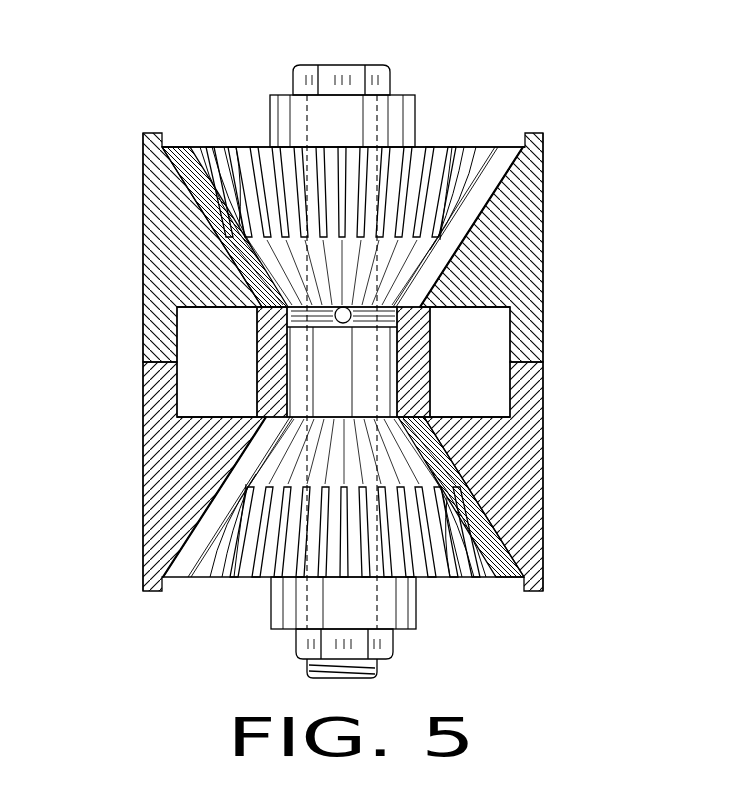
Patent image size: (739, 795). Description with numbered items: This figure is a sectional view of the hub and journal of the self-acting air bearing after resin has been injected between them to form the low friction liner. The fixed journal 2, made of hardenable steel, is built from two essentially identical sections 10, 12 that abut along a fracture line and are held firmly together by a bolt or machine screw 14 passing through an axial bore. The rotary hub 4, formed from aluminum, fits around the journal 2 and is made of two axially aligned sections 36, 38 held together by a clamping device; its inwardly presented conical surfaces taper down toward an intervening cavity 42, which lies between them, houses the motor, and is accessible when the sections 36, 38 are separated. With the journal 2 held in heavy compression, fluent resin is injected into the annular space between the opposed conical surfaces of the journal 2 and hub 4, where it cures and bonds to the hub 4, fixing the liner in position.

The journal 2 is at (457, 147).
The hub 4 is at (143, 340).
The journal section 10 is at (230, 150).
The journal section 12 is at (243, 578).
The screw 14 is at (358, 65).
The hub section 36 is at (145, 268).
The hub section 38 is at (153, 462).
The intervening cavity 42 is at (467, 352).